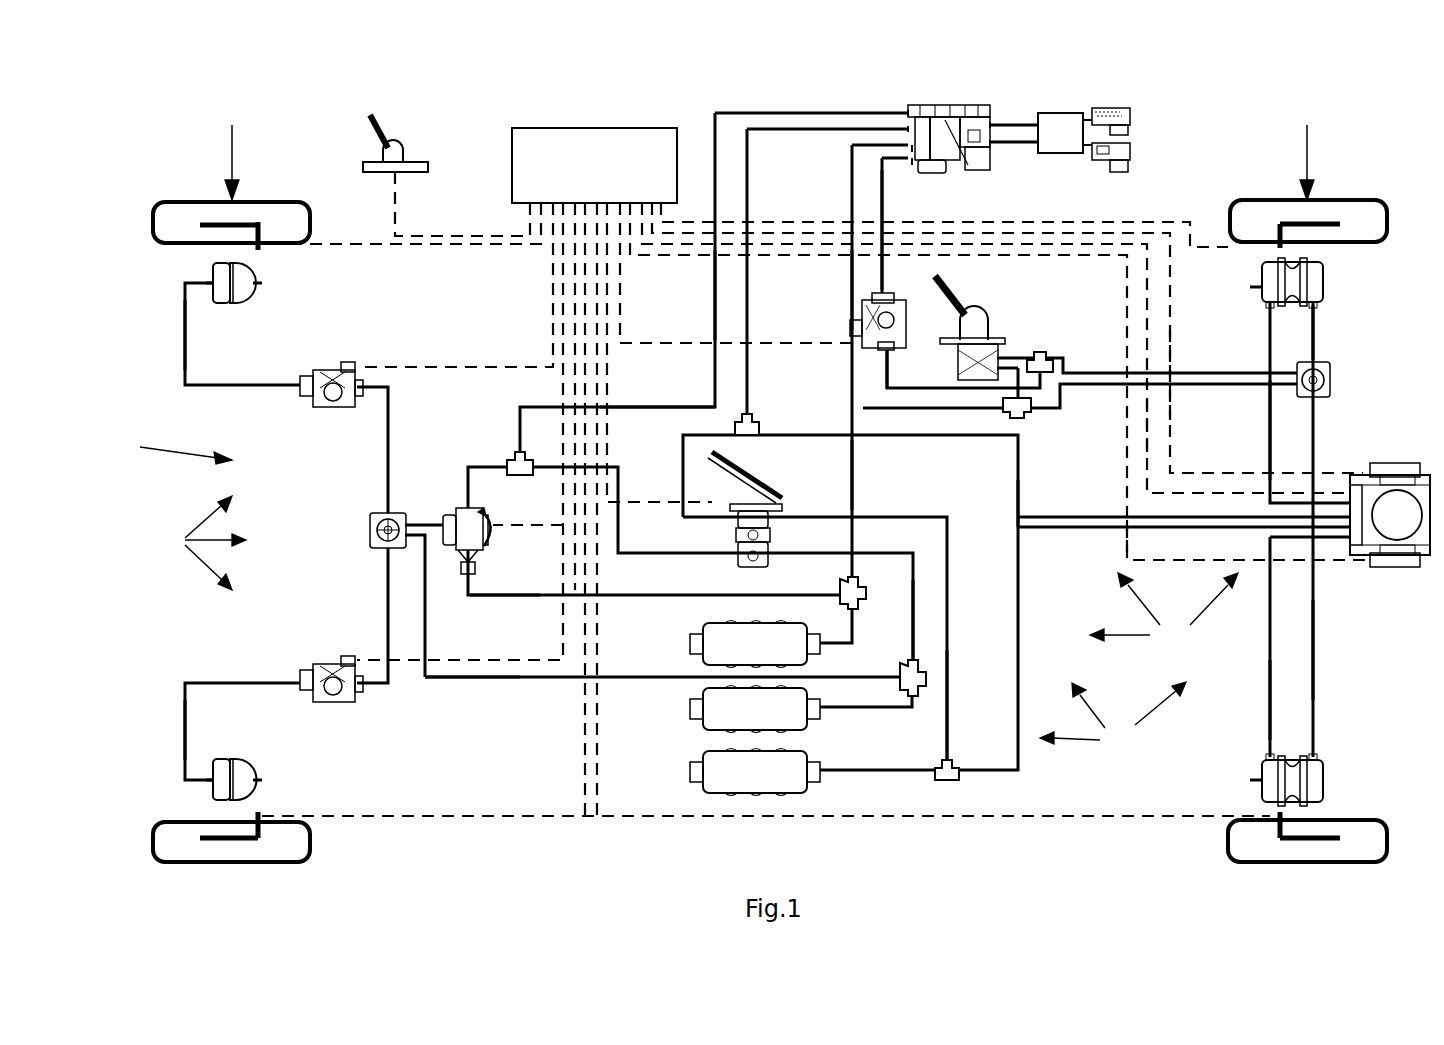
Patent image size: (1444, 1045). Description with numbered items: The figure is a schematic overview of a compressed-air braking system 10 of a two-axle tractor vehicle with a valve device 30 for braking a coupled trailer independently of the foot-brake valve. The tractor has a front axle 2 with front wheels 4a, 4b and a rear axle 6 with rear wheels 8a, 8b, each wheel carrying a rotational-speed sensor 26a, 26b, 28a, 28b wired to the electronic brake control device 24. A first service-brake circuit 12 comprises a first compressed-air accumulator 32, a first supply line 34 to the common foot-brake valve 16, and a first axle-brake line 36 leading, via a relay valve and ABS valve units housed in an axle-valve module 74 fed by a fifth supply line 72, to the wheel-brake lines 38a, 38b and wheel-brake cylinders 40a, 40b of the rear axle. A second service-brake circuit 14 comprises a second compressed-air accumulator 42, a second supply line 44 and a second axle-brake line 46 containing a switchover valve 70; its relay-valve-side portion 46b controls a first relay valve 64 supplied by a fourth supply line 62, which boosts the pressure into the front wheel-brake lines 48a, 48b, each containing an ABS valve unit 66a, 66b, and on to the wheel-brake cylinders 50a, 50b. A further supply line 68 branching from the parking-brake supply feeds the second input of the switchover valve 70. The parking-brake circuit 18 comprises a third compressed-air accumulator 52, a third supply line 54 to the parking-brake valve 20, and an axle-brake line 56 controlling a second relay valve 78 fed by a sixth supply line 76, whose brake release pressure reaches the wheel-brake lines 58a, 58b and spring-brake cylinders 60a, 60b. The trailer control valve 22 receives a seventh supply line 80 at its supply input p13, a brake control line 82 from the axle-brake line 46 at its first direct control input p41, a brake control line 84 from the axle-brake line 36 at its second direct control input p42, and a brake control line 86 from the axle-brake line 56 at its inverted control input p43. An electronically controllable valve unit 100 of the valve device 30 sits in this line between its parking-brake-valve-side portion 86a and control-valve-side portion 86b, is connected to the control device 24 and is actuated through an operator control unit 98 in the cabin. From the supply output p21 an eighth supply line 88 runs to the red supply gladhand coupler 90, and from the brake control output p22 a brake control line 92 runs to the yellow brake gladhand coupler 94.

The front axle 2 is at (232, 149).
The front wheel 4a is at (175, 200).
The front wheel 4b is at (312, 842).
The rear axle 6 is at (1307, 147).
The rear wheel 8a is at (1363, 200).
The rear wheel 8b is at (1228, 840).
The compressed-air braking system 10 is at (171, 449).
The first service-brake circuit 12 is at (1113, 716).
The second service-brake circuit 14 is at (197, 543).
The foot-brake valve 16 is at (780, 512).
The parking-brake circuit 18 is at (1164, 611).
The parking-brake valve 20 is at (985, 330).
The trailer control valve 22 is at (950, 106).
The electronic brake control device 24 is at (577, 128).
The rotational-speed sensor 26a is at (255, 247).
The rotational-speed sensor 26b is at (255, 815).
The rotational-speed sensor 28a is at (1285, 246).
The rotational-speed sensor 28b is at (1285, 817).
The valve device 30 is at (831, 321).
The electronically controllable valve unit 100 is at (862, 320).
The first compressed-air accumulator 32 is at (690, 772).
The first supply line 34 is at (947, 730).
The first axle-brake line 36 is at (1048, 520).
The wheel-brake line 38a is at (1270, 425).
The wheel-brake line 38b is at (1270, 718).
The wheel-brake cylinder 40a is at (1258, 285).
The wheel-brake cylinder 40b is at (1258, 780).
The second compressed-air accumulator 42 is at (690, 708).
The second supply line 44 is at (912, 610).
The second axle-brake line 46 is at (465, 488).
The relay-valve-side portion of axle-brake line 46b is at (432, 545).
The front wheel-brake line 48a is at (185, 333).
The front wheel-brake line 48b is at (185, 728).
The wheel-brake cylinder 50a is at (262, 284).
The wheel-brake cylinder 50b is at (262, 780).
The third compressed-air accumulator 52 is at (690, 644).
The third supply line 54 is at (855, 470).
The axle-brake line 56 is at (1090, 420).
The wheel-brake line 58a is at (1313, 340).
The wheel-brake line 58b is at (1313, 645).
The spring-brake cylinder 60a is at (1325, 287).
The spring-brake cylinder 60b is at (1325, 780).
The fourth supply line 62 is at (455, 680).
The first relay valve 64 is at (368, 530).
The ABS valve unit 66a is at (320, 400).
The ABS valve unit 66b is at (318, 692).
The fourth supply line 68 is at (495, 598).
The switchover valve 70 is at (488, 548).
The fifth supply line 72 is at (1052, 560).
The axle-valve module 74 is at (1402, 568).
The sixth supply line 76 is at (1098, 400).
The second relay valve 78 is at (1332, 382).
The seventh supply line 80 is at (852, 285).
The brake control line 82 is at (660, 405).
The brake control line 84 is at (714, 295).
The brake control line 86 is at (894, 280).
The parking-brake-valve-side portion of brake control line 86a is at (887, 370).
The control-valve-side portion of brake control line 86b is at (882, 212).
The eighth supply line 88 is at (1065, 112).
The supply gladhand coupler 90 is at (1132, 120).
The brake control line 92 is at (1090, 118).
The brake gladhand coupler 94 is at (1132, 156).
The electrical operator control unit 98 is at (395, 135).
The supply input p13 is at (912, 148).
The supply output p21 is at (992, 118).
The brake control output p22 is at (992, 148).
The first direct control input p41 is at (912, 108).
The second direct control input p42 is at (908, 112).
The inverted control input p43 is at (912, 165).